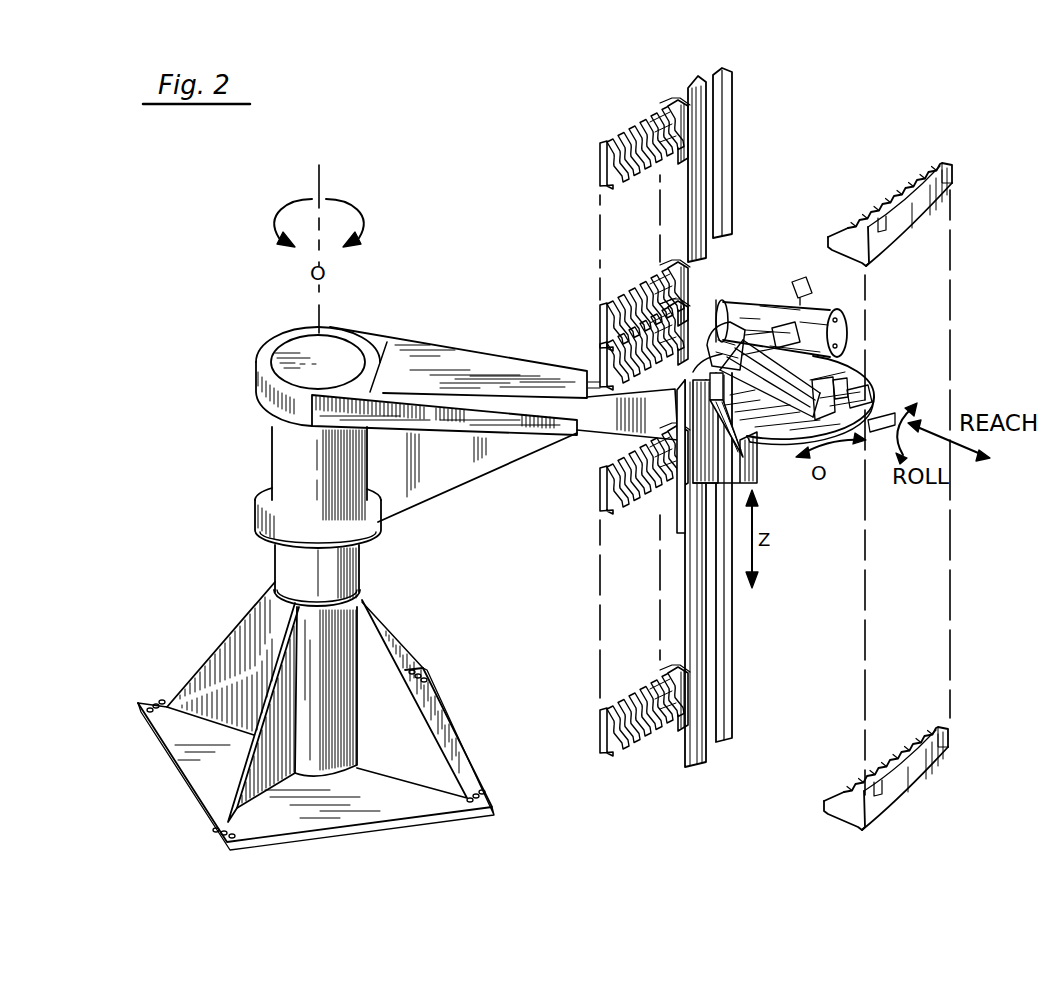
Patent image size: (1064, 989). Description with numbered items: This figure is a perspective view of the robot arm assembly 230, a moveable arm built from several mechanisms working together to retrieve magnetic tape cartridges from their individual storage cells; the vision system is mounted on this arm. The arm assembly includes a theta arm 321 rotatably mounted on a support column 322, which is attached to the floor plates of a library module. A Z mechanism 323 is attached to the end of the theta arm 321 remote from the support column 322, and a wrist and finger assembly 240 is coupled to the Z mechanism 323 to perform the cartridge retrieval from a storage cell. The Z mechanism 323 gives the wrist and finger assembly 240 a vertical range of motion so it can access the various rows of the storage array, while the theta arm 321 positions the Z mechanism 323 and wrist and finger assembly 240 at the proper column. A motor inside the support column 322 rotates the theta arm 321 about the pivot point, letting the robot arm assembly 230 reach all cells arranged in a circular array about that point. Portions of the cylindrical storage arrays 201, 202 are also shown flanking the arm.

The first workpiece track/conveyor rail 201 is at (634, 128).
The second workpiece track/conveyor rail 202 is at (942, 190).
The robot arm assembly 230 is at (468, 362).
The wrist and finger assembly 240 is at (742, 350).
The theta arm 321 is at (450, 455).
The support column 322 is at (358, 568).
The Z mechanism 323 is at (715, 634).